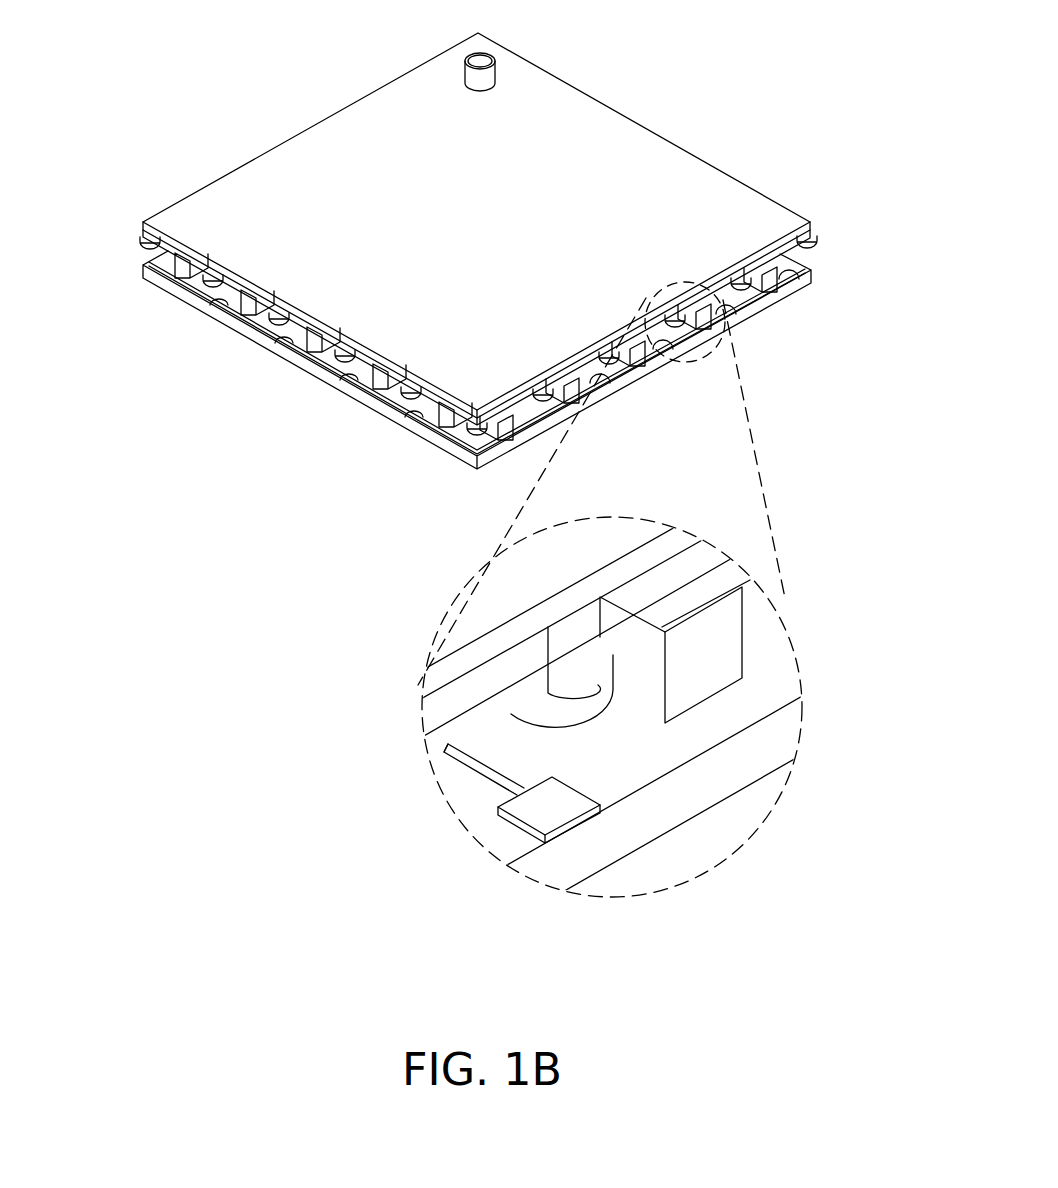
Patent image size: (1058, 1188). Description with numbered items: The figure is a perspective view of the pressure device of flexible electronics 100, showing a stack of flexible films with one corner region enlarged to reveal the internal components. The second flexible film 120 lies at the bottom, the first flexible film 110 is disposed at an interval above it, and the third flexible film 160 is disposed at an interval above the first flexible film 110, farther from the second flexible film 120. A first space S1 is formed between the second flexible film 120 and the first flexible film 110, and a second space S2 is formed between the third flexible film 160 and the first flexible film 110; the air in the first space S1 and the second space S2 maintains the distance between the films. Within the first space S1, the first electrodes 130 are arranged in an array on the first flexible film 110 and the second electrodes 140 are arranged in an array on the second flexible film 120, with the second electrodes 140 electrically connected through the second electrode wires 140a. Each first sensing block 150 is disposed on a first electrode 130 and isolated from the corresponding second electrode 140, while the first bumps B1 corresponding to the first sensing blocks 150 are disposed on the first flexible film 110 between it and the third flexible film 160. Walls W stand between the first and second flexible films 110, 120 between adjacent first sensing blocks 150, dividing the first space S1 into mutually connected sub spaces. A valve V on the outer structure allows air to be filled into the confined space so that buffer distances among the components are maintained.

The pressure device of flexible electronics 100 is at (777, 78).
The first flexible film 110 is at (143, 240).
The second flexible film 120 is at (160, 284).
The first electrode 130 is at (577, 677).
The second electrode 140 is at (557, 813).
The second electrode wire 140a is at (250, 322).
The first sensing block 150 is at (567, 717).
The third flexible film 160 is at (172, 222).
The valve V is at (483, 80).
The wall W is at (710, 653).
The first bump B1 is at (567, 645).
The first space S1 is at (753, 292).
The second space S2 is at (783, 247).